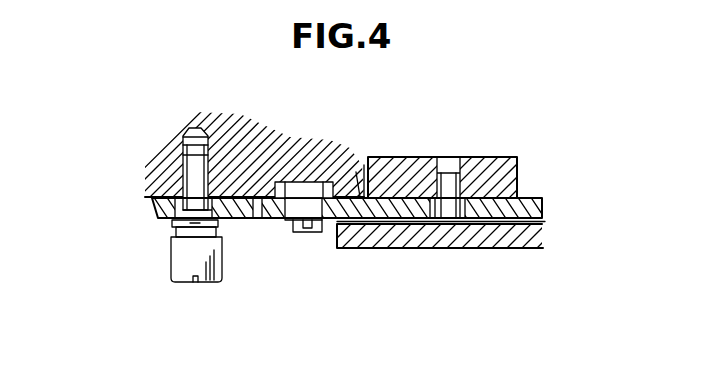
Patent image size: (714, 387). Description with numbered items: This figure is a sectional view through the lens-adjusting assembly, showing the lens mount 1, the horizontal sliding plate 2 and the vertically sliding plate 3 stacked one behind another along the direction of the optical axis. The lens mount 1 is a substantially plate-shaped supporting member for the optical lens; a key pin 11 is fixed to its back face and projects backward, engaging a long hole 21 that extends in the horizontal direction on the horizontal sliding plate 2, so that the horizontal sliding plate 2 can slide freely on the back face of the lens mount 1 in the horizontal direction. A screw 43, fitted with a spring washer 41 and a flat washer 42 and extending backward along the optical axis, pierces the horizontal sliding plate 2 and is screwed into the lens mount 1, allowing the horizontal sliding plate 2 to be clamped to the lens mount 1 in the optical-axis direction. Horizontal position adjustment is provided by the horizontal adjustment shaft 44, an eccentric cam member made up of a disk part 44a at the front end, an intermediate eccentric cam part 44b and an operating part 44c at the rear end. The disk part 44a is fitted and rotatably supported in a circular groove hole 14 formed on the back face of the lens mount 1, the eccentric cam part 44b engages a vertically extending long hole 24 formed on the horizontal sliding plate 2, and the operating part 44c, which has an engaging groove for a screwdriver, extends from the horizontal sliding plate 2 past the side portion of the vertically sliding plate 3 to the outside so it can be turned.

The lens mount 1 is at (402, 158).
The horizontal sliding plate 2 is at (531, 211).
The vertically sliding plate 3 is at (510, 240).
The key pin 11 is at (452, 172).
The circular groove hole 14 is at (361, 188).
The long hole 21 is at (466, 203).
The vertically extending long hole 24 is at (313, 181).
The spring washer 41 is at (172, 226).
The flat washer 42 is at (172, 222).
The screw 43 is at (170, 258).
The horizontal adjustment shaft 44 is at (317, 255).
The disk part 44a is at (275, 212).
The eccentric cam part 44b is at (295, 223).
The operating part 44c is at (342, 253).